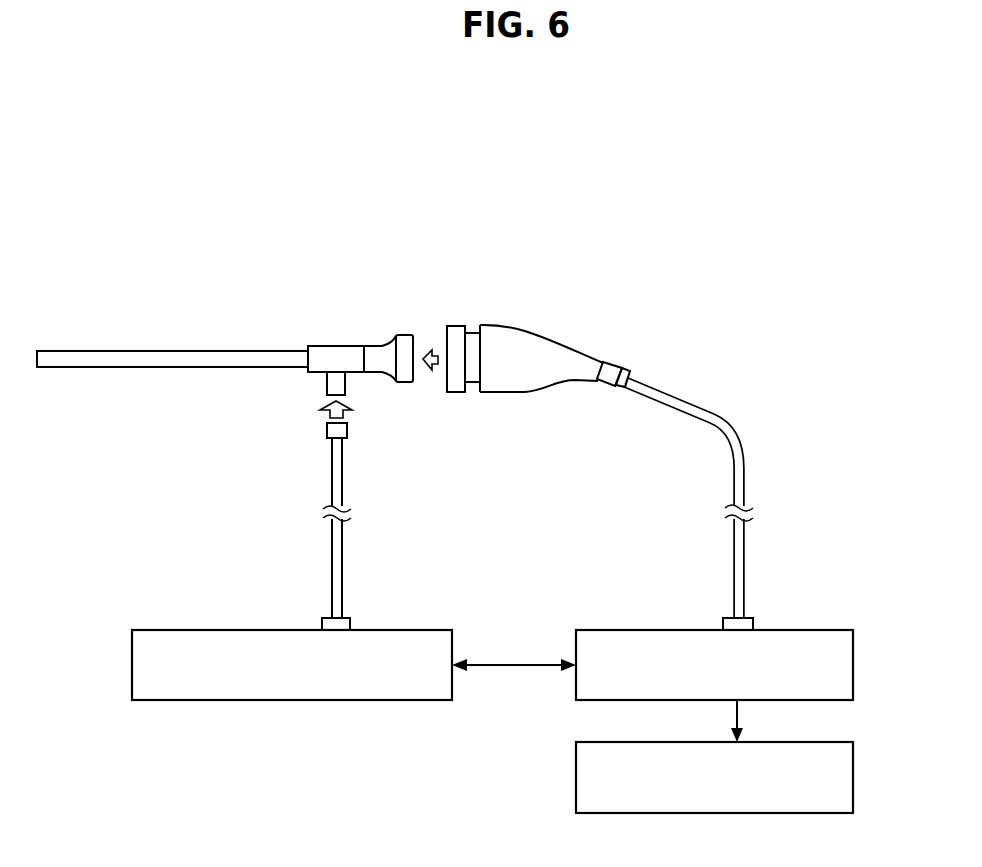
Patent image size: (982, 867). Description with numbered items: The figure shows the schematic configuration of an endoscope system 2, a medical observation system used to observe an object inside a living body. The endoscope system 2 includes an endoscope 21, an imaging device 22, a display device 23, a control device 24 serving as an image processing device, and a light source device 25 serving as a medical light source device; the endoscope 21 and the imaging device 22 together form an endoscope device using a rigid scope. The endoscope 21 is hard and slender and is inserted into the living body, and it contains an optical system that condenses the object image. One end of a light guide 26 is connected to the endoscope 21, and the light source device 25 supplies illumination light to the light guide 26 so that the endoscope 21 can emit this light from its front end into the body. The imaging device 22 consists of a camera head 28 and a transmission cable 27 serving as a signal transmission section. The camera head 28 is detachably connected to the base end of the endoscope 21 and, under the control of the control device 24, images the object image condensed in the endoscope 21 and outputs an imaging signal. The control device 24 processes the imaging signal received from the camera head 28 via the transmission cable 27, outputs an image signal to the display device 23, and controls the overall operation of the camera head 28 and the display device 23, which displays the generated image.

The endoscope system 2 is at (695, 268).
The endoscope 21 is at (277, 350).
The imaging device 22 is at (455, 243).
The display device 23 is at (822, 742).
The control device 24 is at (822, 630).
The light source device 25 is at (397, 630).
The light guide 26 is at (331, 574).
The transmission cable 27 is at (658, 390).
The camera head 28 is at (509, 326).